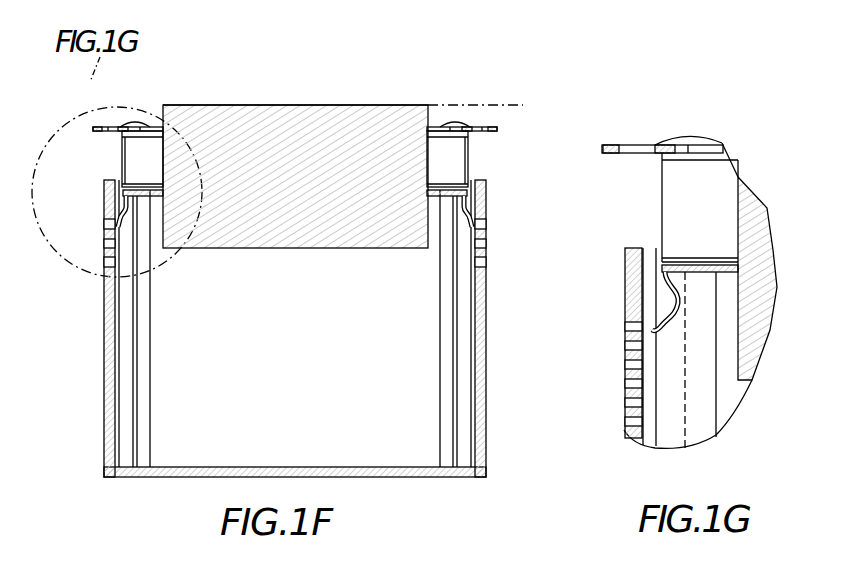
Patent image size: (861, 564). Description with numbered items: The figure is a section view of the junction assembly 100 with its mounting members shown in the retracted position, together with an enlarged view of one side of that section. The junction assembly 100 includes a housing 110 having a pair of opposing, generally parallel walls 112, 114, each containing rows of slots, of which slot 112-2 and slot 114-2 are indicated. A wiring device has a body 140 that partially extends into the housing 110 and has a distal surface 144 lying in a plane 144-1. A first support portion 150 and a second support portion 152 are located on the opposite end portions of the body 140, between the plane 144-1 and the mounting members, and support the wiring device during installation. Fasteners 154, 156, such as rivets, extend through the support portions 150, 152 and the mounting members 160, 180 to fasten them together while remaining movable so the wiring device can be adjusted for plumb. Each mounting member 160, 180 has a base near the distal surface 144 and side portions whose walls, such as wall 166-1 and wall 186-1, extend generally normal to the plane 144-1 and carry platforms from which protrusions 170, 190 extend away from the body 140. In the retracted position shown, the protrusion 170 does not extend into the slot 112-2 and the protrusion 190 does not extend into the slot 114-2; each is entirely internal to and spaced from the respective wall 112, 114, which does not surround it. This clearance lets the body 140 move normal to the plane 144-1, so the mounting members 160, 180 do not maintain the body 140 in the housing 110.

In FIG. 1F, the junction assembly 100 is at (61, 460).
In FIG. 1G, the junction assembly 100 is at (800, 410).
In FIG. 1F, the housing 110 is at (91, 334).
In FIG. 1F, the wall 112 is at (485, 199).
In FIG. 1F, the slot 112-2 is at (480, 226).
In FIG. 1F, the wall 114 is at (104, 202).
In FIG. 1G, the wall 114 is at (627, 271).
In FIG. 1F, the slot 114-2 is at (104, 222).
In FIG. 1G, the slot 114-2 is at (626, 331).
In FIG. 1F, the body 140 is at (221, 91).
In FIG. 1G, the body 140 is at (749, 261).
In FIG. 1F, the distal surface 144 is at (272, 104).
In FIG. 1F, the plane 144-1 is at (440, 104).
In FIG. 1F, the first support portion 150 is at (506, 116).
In FIG. 1F, the second support portion 152 is at (86, 114).
In FIG. 1G, the second support portion 152 is at (639, 128).
In FIG. 1F, the fastener 154 is at (457, 111).
In FIG. 1F, the fastener 156 is at (141, 110).
In FIG. 1G, the fastener 156 is at (705, 121).
In FIG. 1F, the mounting member 160 is at (527, 168).
In FIG. 1F, the wall 166-1 is at (460, 150).
In FIG. 1F, the protrusion 170 is at (452, 222).
In FIG. 1F, the mounting member 180 is at (104, 167).
In FIG. 1G, the mounting member 180 is at (648, 232).
In FIG. 1F, the wall 186-1 is at (130, 155).
In FIG. 1G, the wall 186-1 is at (678, 196).
In FIG. 1F, the protrusion 190 is at (121, 226).
In FIG. 1G, the protrusion 190 is at (659, 334).